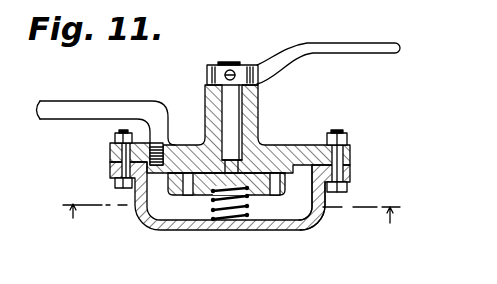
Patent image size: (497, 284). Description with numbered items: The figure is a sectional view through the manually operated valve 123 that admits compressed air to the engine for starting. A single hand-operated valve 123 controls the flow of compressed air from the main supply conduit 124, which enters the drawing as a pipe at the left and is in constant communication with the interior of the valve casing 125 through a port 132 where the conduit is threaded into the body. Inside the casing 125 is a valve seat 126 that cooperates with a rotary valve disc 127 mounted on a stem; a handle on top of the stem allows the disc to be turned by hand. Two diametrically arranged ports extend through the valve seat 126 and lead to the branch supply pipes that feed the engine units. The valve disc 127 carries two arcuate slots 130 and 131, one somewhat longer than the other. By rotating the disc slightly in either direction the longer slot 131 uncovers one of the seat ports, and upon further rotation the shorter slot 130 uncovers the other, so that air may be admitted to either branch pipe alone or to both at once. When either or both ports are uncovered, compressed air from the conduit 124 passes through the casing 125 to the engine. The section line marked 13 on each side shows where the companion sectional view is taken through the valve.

The sectional view line 13 is at (230, 210).
The manually operated valve 123 is at (329, 149).
The main supply conduit 124 is at (71, 113).
The valve casing 125 is at (142, 218).
The valve seat 126 is at (257, 170).
The rotary valve disc 127 is at (258, 193).
The arcuate slot 130 is at (187, 195).
The arcuate slot 131 is at (295, 205).
The port 132 is at (164, 147).